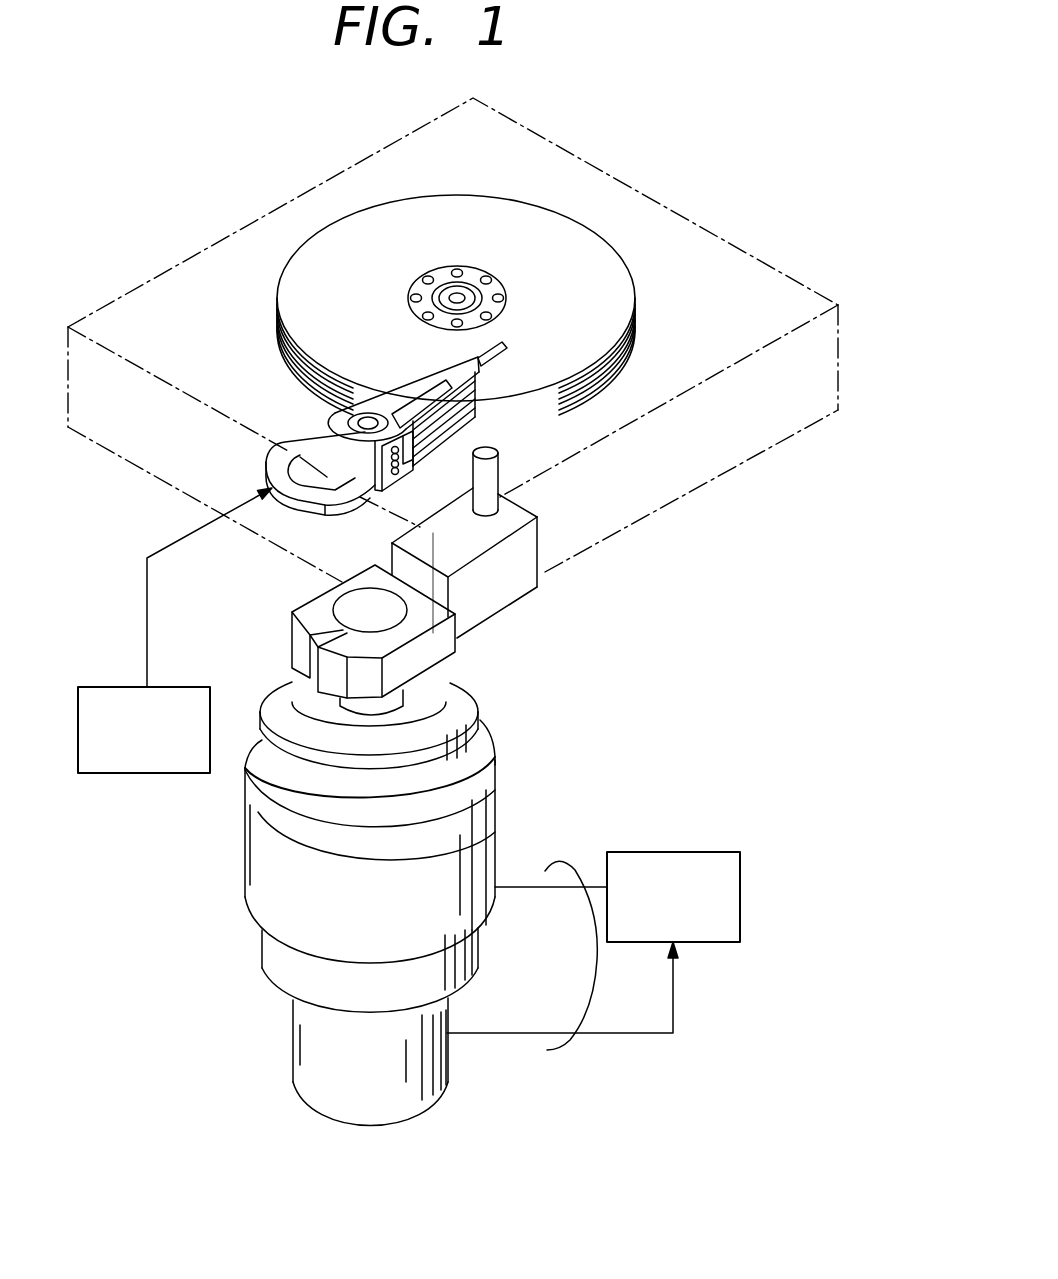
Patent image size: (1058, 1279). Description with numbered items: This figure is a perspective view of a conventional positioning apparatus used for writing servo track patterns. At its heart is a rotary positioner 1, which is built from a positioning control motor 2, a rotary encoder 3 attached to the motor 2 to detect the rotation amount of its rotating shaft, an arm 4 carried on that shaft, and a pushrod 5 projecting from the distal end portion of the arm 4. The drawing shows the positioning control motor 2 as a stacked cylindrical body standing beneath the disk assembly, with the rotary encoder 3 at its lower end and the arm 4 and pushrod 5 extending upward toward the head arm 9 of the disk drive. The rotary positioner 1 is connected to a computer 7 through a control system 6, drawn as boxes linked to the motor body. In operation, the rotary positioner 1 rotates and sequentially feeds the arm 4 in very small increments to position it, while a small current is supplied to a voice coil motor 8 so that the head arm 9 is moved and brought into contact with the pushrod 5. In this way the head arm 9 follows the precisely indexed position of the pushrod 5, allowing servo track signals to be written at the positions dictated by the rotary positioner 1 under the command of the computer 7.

The rotary positioner 1 is at (388, 865).
The positioning control motor 2 is at (482, 838).
The rotary encoder 3 is at (355, 1081).
The arm 4 is at (513, 608).
The pushrod 5 is at (492, 478).
The control system 6 is at (580, 1050).
The computer 7 is at (698, 852).
The voice coil motor 8 is at (273, 461).
The head arm 9 is at (475, 408).